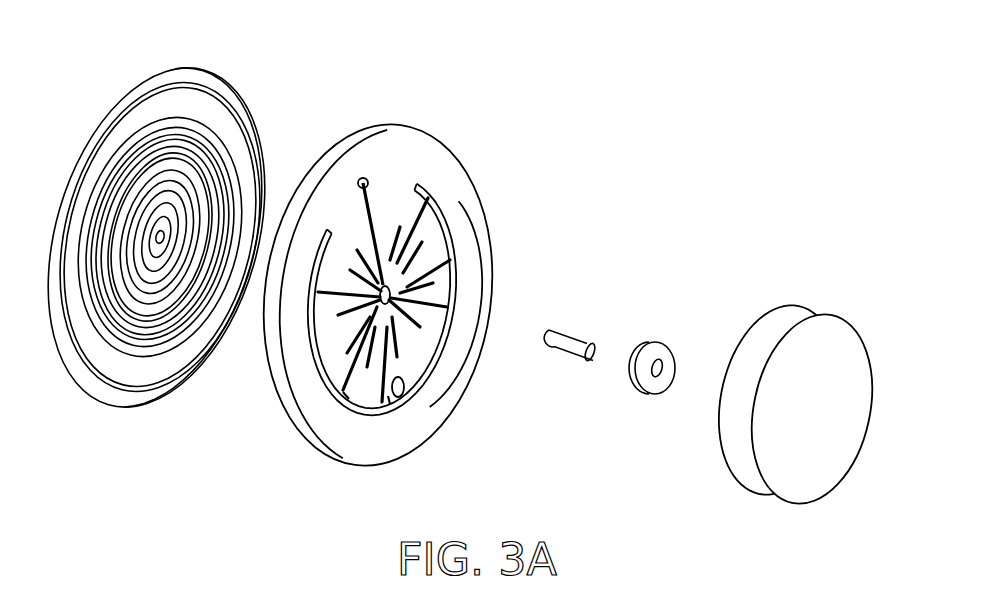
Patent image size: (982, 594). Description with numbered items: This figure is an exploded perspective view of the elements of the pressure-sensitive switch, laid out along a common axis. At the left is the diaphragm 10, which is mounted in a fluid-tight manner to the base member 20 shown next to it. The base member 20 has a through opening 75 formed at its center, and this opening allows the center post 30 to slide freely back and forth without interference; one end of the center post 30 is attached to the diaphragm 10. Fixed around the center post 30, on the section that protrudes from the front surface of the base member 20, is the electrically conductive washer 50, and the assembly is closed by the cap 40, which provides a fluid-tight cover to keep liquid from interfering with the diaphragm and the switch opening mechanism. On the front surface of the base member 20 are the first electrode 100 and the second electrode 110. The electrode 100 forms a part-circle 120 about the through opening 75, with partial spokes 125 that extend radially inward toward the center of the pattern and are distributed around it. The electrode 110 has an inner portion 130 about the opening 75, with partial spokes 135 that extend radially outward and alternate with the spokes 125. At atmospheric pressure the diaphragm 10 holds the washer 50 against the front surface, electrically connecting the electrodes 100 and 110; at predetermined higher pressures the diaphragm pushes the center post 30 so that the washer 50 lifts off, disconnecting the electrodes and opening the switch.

The diaphragm 10 is at (130, 105).
The base member 20 is at (345, 437).
The center post 30 is at (573, 347).
The cap 40 is at (817, 335).
The electrically conductive washer 50 is at (663, 348).
The through opening 75 is at (392, 290).
The first electrode 100 is at (405, 386).
The second electrode 110 is at (365, 178).
The part-circle 120 is at (422, 185).
The partial spokes 125 is at (345, 392).
The inner portion 130 is at (420, 268).
The partial spokes 135 is at (372, 277).